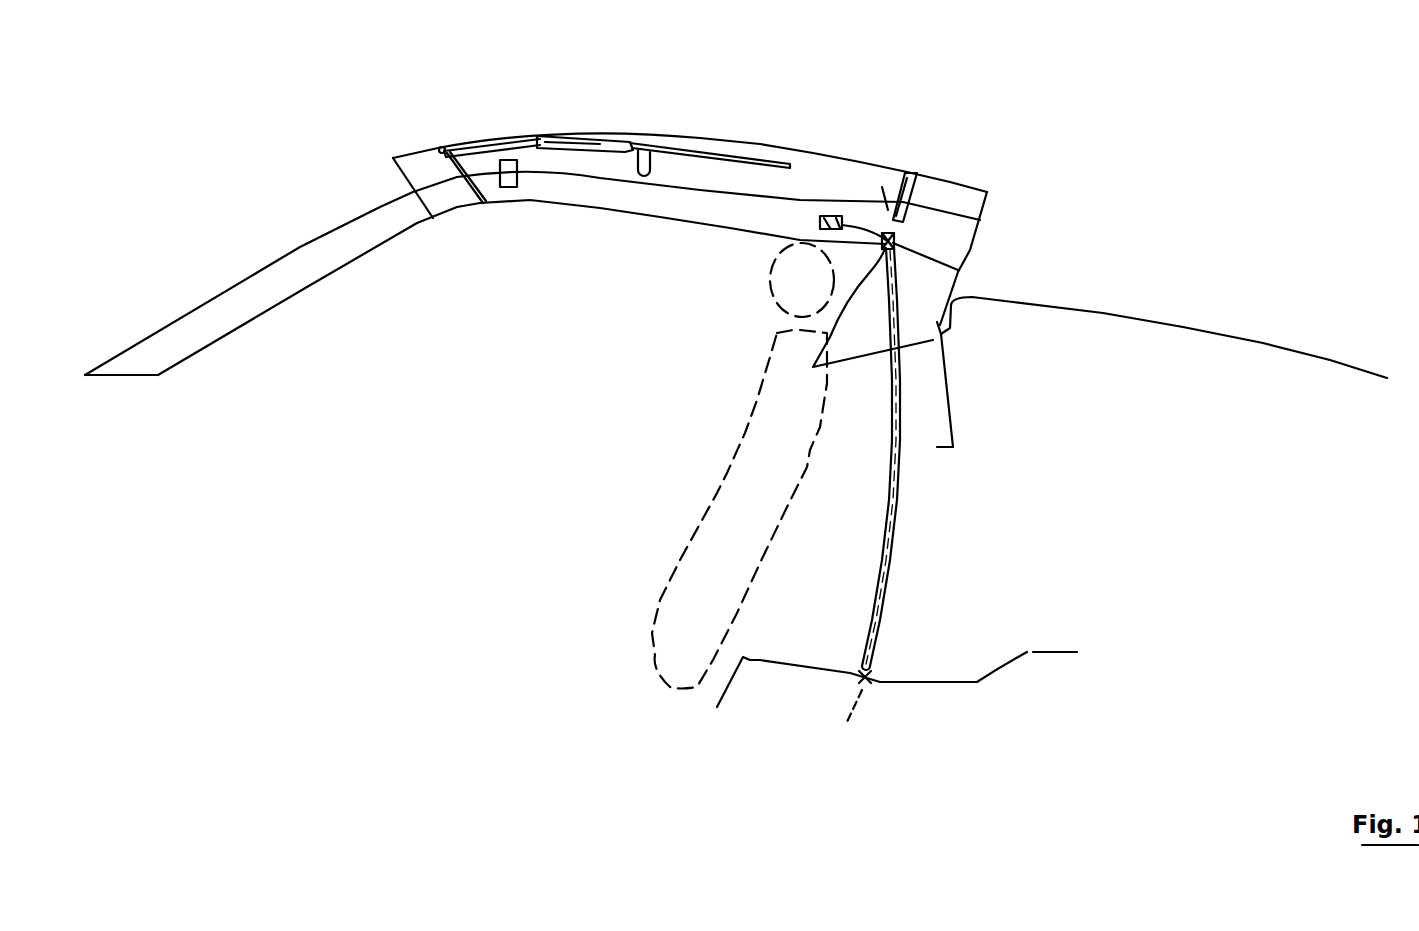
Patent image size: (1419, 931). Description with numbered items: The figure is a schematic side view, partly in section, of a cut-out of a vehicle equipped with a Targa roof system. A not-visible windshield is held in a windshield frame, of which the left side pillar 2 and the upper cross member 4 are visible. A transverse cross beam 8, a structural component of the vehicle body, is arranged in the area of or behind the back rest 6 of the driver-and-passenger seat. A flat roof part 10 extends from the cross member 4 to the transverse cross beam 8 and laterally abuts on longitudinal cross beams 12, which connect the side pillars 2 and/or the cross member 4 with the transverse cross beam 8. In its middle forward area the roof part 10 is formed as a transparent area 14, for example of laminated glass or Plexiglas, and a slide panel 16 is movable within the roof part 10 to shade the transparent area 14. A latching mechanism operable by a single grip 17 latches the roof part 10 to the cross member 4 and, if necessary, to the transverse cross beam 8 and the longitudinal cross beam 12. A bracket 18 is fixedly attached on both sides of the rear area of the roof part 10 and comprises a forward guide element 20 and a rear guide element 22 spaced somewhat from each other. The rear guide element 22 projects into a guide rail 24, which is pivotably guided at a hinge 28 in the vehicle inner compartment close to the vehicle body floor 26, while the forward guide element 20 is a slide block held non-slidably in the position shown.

The side pillar 2 is at (290, 282).
The upper cross member 4 is at (422, 167).
The back rest 6 is at (733, 520).
The transverse cross beam 8 is at (950, 193).
The flat roof part 10 is at (803, 160).
The longitudinal cross beam 12 is at (580, 198).
The transparent area 14 is at (465, 140).
The slide panel 16 is at (508, 140).
The grip 17 is at (502, 188).
The bracket 18 is at (858, 223).
The forward guide element 20 is at (823, 237).
The rear guide element 22 is at (893, 238).
The guide rail 24 is at (890, 526).
The vehicle body floor 26 is at (940, 683).
The hinge 28 is at (868, 684).